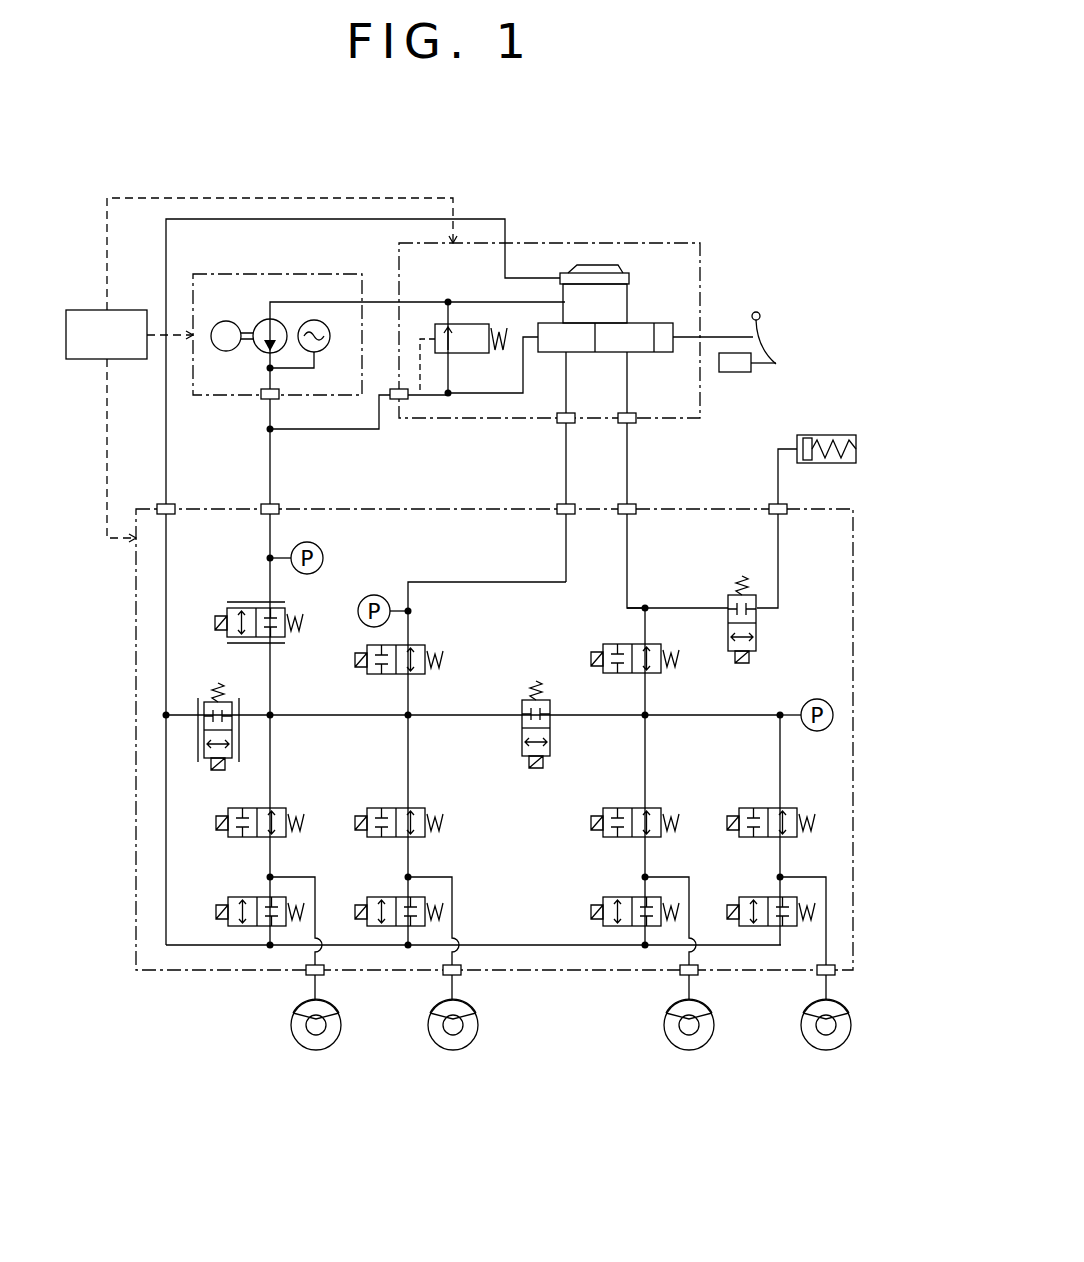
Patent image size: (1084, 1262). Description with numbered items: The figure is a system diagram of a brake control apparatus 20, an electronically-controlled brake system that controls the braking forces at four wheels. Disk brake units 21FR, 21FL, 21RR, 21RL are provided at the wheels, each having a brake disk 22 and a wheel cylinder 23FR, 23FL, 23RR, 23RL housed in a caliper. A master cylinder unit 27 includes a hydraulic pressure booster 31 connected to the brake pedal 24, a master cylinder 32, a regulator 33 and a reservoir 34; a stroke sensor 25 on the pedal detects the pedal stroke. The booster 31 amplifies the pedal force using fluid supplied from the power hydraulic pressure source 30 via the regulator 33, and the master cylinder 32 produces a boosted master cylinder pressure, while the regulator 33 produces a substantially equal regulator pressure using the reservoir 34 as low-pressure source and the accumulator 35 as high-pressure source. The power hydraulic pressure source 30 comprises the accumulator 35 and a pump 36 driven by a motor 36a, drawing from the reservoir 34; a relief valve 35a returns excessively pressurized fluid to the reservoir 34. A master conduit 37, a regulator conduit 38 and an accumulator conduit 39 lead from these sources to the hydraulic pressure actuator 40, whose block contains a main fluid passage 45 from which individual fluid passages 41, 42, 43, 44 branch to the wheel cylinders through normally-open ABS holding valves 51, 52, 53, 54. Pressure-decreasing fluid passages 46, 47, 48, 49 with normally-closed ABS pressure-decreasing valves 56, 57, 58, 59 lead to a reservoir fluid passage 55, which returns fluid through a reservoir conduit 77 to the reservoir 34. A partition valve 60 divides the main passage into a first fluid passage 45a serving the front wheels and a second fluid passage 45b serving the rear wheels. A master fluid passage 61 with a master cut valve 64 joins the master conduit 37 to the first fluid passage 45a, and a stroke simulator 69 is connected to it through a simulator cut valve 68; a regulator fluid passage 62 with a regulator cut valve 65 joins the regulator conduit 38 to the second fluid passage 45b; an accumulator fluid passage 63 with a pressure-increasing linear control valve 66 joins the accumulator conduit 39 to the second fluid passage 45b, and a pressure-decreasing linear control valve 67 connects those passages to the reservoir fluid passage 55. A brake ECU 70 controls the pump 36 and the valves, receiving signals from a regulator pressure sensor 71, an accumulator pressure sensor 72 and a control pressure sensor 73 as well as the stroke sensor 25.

The brake control apparatus 20 is at (739, 216).
The disk brake unit 21RR is at (287, 1048).
The disk brake unit 21RL is at (424, 1048).
The disk brake unit 21FR is at (660, 1048).
The disk brake unit 21FL is at (797, 1048).
The brake disk 22 is at (314, 1050).
The wheel cylinder 23RR is at (298, 1004).
The wheel cylinder 23RL is at (433, 1004).
The wheel cylinder 23FR is at (670, 1004).
The wheel cylinder 23FL is at (805, 1004).
The brake pedal 24 is at (786, 370).
The stroke sensor 25 is at (735, 372).
The master cylinder unit 27 is at (648, 232).
The power hydraulic pressure source 30 is at (272, 271).
The hydraulic pressure booster 31 is at (662, 321).
The master cylinder 32 is at (614, 356).
The regulator 33 is at (555, 356).
The reservoir 34 is at (602, 265).
The accumulator 35 is at (316, 353).
The relief valve 35a is at (470, 356).
The pump 36 is at (258, 353).
The motor 36a is at (232, 322).
The master conduit 37 is at (624, 466).
The regulator conduit 38 is at (560, 466).
The accumulator conduit 39 is at (273, 476).
The hydraulic pressure actuator 40 is at (801, 506).
The individual fluid passage 41 is at (676, 871).
The individual fluid passage 42 is at (814, 871).
The individual fluid passage 43 is at (304, 871).
The individual fluid passage 44 is at (439, 871).
The main fluid passage 45 is at (706, 712).
The first fluid passage 45a is at (676, 716).
The second fluid passage 45b is at (306, 716).
The pressure-decreasing fluid passage 46 is at (637, 882).
The pressure-decreasing fluid passage 47 is at (775, 882).
The pressure-decreasing fluid passage 48 is at (264, 882).
The pressure-decreasing fluid passage 49 is at (402, 882).
The ABS holding valve 51 is at (661, 806).
The ABS holding valve 52 is at (799, 806).
The ABS holding valve 53 is at (288, 806).
The ABS holding valve 54 is at (426, 806).
The reservoir fluid passage 55 is at (204, 943).
The ABS pressure-decreasing valve 56 is at (596, 896).
The ABS pressure-decreasing valve 57 is at (734, 896).
The ABS pressure-decreasing valve 58 is at (224, 896).
The ABS pressure-decreasing valve 59 is at (361, 896).
The partition valve 60 is at (552, 743).
The master fluid passage 61 is at (624, 596).
The regulator fluid passage 62 is at (492, 580).
The accumulator fluid passage 63 is at (274, 690).
The master cut valve 64 is at (670, 654).
The regulator cut valve 65 is at (432, 654).
The pressure-increasing linear control valve 66 is at (304, 640).
The pressure-decreasing linear control valve 67 is at (214, 682).
The simulator cut valve 68 is at (759, 637).
The stroke simulator 69 is at (820, 434).
The brake ECU 70 is at (90, 301).
The regulator pressure sensor 71 is at (376, 591).
The accumulator pressure sensor 72 is at (322, 547).
The control pressure sensor 73 is at (820, 699).
The reservoir conduit 77 is at (168, 460).